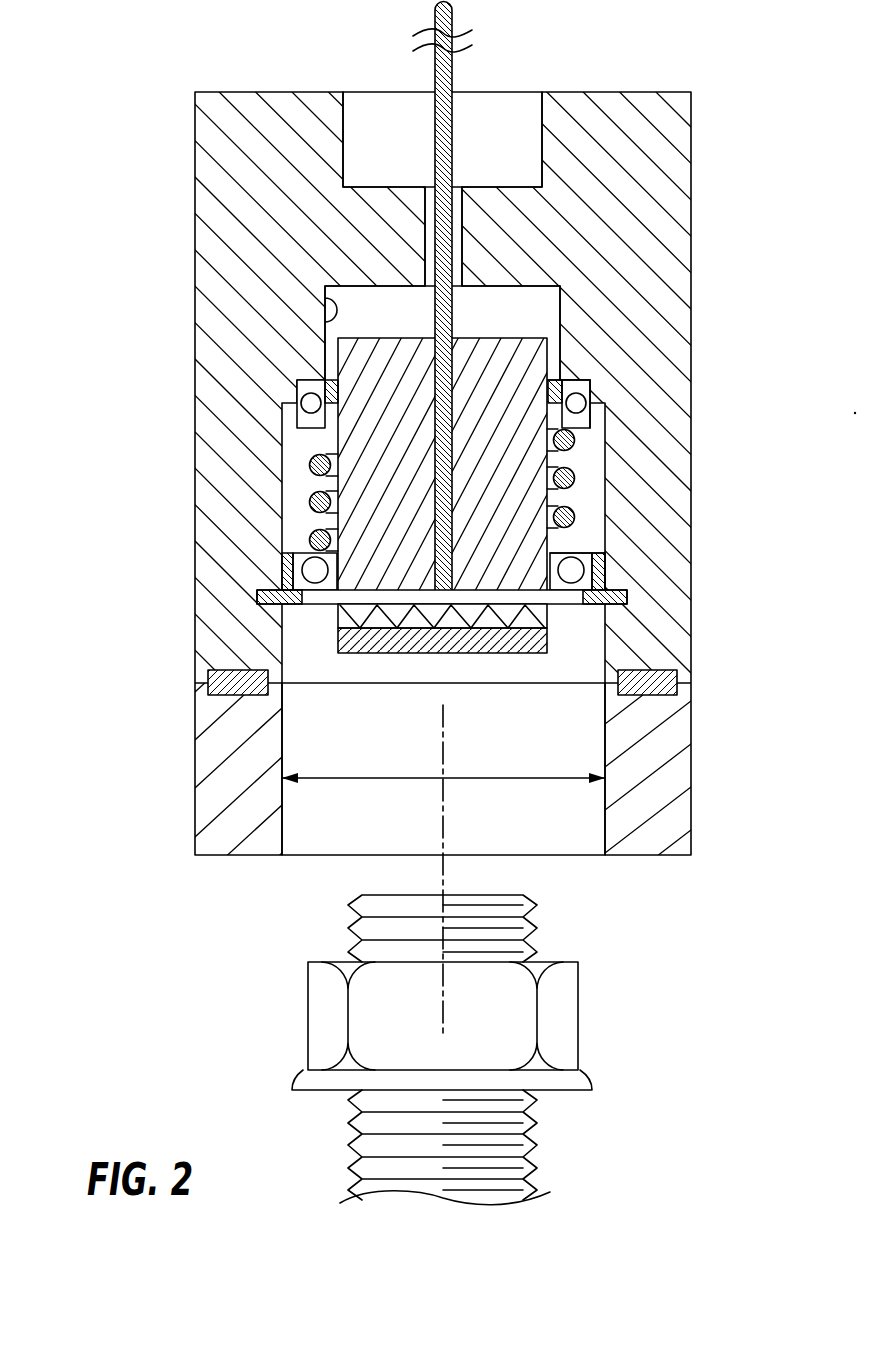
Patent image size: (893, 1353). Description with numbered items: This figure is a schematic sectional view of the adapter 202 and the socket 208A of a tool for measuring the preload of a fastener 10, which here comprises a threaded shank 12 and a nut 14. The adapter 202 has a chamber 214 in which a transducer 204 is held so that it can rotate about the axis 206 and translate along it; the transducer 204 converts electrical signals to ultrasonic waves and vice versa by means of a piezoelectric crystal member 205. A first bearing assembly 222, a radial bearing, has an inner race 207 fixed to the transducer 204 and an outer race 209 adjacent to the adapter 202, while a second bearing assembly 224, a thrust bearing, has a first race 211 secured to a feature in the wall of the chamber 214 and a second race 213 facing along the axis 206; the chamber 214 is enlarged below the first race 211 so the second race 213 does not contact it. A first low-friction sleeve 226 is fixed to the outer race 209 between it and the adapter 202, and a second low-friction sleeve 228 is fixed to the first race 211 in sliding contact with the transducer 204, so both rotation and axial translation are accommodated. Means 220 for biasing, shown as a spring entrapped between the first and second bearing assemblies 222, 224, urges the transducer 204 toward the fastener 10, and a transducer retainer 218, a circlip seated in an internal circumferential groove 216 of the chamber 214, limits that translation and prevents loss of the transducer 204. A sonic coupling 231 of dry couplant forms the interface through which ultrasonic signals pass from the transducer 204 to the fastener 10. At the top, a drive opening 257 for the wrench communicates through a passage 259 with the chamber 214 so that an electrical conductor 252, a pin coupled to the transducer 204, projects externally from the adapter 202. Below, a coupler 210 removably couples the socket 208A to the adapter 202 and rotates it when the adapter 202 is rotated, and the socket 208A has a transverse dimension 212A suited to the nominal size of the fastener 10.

The fastener 10 is at (406, 955).
The threaded shank 12 is at (537, 1123).
The nut 14 is at (578, 1007).
The adapter 202 is at (114, 200).
The transducer 204 is at (338, 360).
The piezoelectric crystal member 205 is at (338, 618).
The axis 206 is at (443, 884).
The inner race 207 is at (572, 552).
The socket 208A is at (168, 768).
The outer race 209 is at (596, 553).
The coupler 210 is at (240, 697).
The first race 211 is at (572, 380).
The transverse dimension 212A is at (347, 779).
The second race 213 is at (590, 452).
The chamber 214 is at (327, 296).
The internal circumferential groove 216 is at (280, 598).
The transducer retainer 218 is at (292, 604).
The means for biasing 220 is at (312, 500).
The first bearing assembly 222 is at (624, 580).
The second bearing assembly 224 is at (612, 390).
The first low-friction sleeve 226 is at (282, 553).
The second low-friction sleeve 228 is at (555, 380).
The sonic coupling 231 is at (448, 653).
The electrical conductor 252 is at (453, 75).
The drive opening 257 is at (343, 118).
The passage 259 is at (462, 217).